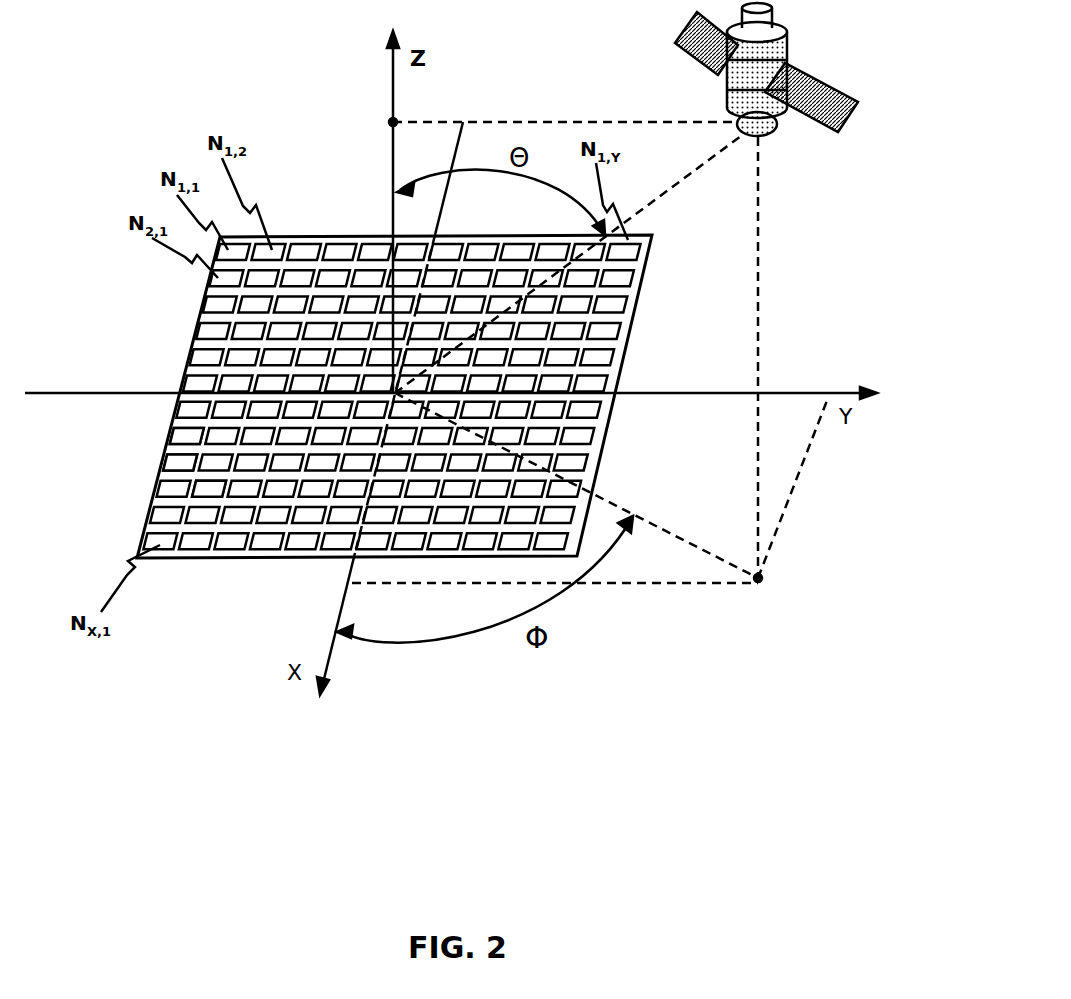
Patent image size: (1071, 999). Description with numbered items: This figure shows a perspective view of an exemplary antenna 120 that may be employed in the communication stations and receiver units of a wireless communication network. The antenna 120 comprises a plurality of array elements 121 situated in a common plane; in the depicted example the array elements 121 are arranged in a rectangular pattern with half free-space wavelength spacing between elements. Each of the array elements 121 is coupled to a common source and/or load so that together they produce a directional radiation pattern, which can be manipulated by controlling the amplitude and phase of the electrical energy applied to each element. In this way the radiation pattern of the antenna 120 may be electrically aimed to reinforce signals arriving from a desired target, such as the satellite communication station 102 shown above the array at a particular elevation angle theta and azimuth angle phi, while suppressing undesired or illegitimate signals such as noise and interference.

The centralized communication station 102 is at (785, 69).
The antenna 120 is at (193, 600).
The array elements 121 is at (145, 462).